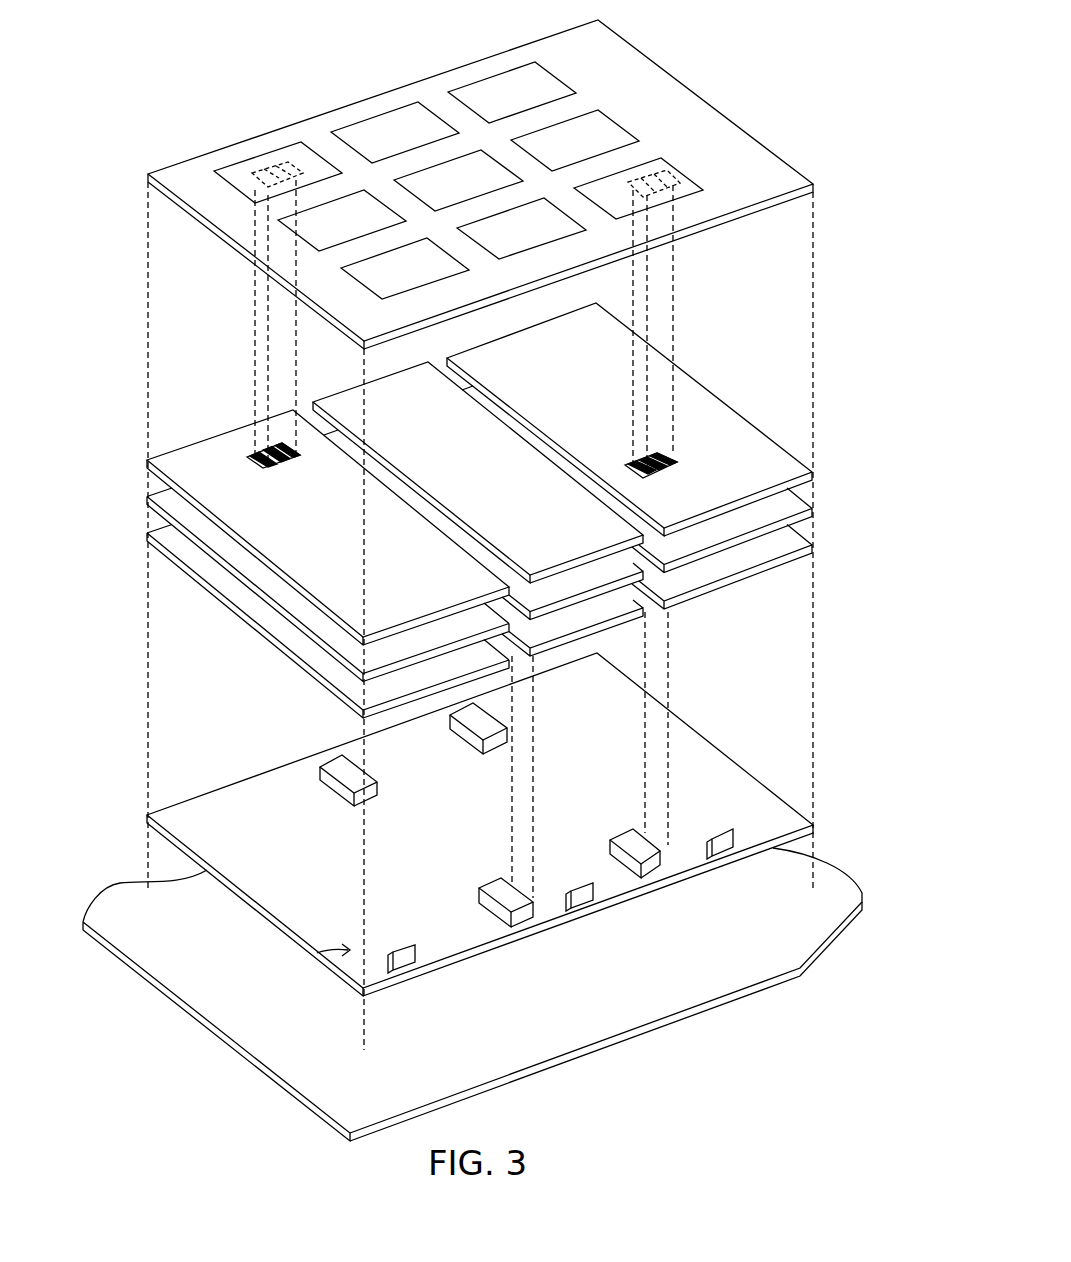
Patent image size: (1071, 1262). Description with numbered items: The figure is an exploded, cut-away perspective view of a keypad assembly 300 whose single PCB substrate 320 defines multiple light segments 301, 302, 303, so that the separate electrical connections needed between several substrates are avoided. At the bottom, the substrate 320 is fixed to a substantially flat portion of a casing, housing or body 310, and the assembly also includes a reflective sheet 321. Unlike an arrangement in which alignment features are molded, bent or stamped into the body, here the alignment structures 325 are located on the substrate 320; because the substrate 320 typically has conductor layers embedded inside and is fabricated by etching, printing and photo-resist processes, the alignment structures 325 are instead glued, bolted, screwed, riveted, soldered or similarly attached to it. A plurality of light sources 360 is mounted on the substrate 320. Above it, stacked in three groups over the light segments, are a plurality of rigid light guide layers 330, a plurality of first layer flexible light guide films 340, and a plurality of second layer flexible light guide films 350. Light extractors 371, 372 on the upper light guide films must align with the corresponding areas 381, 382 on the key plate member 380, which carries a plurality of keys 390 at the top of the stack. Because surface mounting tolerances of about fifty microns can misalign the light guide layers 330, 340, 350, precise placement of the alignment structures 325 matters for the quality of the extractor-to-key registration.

The keypad assembly 300 is at (797, 27).
The light segment 301 is at (330, 878).
The light segment 302 is at (495, 820).
The light segment 303 is at (625, 750).
The body 310 is at (258, 976).
The substrate 320 is at (253, 725).
The reflective sheet 321 is at (317, 953).
The alignment structures 325 is at (340, 785).
The rigid light guide layers 330 is at (168, 540).
The first layer flexible light guide films 340 is at (168, 505).
The second layer flexible light guide films 350 is at (170, 465).
The light sources 360 is at (408, 962).
The light extractor 371 is at (248, 457).
The light extractor 372 is at (675, 462).
The key plate member 380 is at (233, 222).
The corresponding area 381 is at (270, 160).
The corresponding area 382 is at (660, 175).
The keys 390 is at (575, 70).